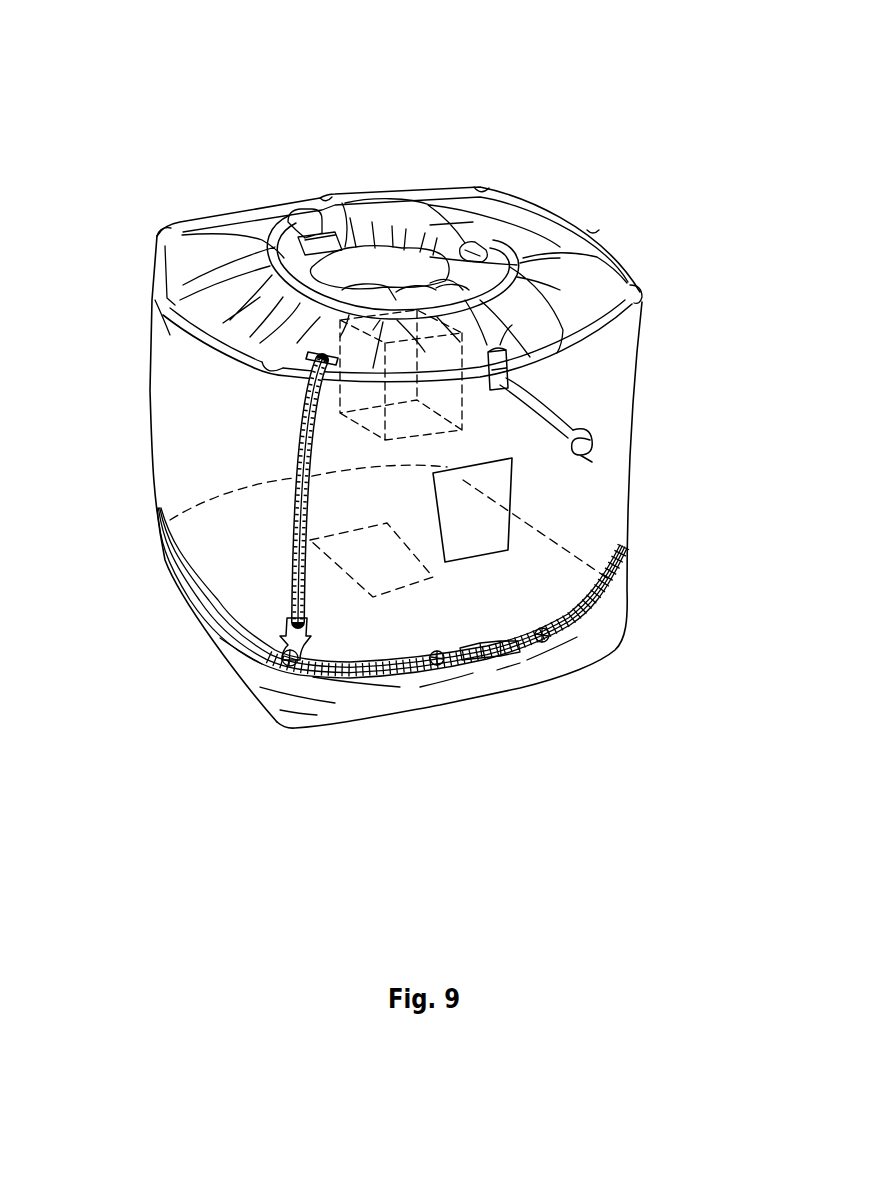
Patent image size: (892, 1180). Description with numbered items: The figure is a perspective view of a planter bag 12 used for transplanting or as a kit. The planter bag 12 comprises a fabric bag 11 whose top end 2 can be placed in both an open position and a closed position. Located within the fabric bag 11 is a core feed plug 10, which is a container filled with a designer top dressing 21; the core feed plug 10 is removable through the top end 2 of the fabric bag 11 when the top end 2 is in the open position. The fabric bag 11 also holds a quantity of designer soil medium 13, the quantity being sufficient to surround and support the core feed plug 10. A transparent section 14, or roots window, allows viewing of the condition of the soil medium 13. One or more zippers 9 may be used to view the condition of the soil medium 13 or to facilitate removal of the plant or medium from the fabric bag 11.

The top end 2 is at (566, 283).
The zippers 9 is at (258, 643).
The core feed plug 10 is at (460, 390).
The fabric bag 11 is at (150, 397).
The planter bag 12 is at (180, 140).
The designer soil medium 13 is at (202, 427).
The transparent section 14 is at (480, 553).
The designer top dressing 21 is at (405, 390).